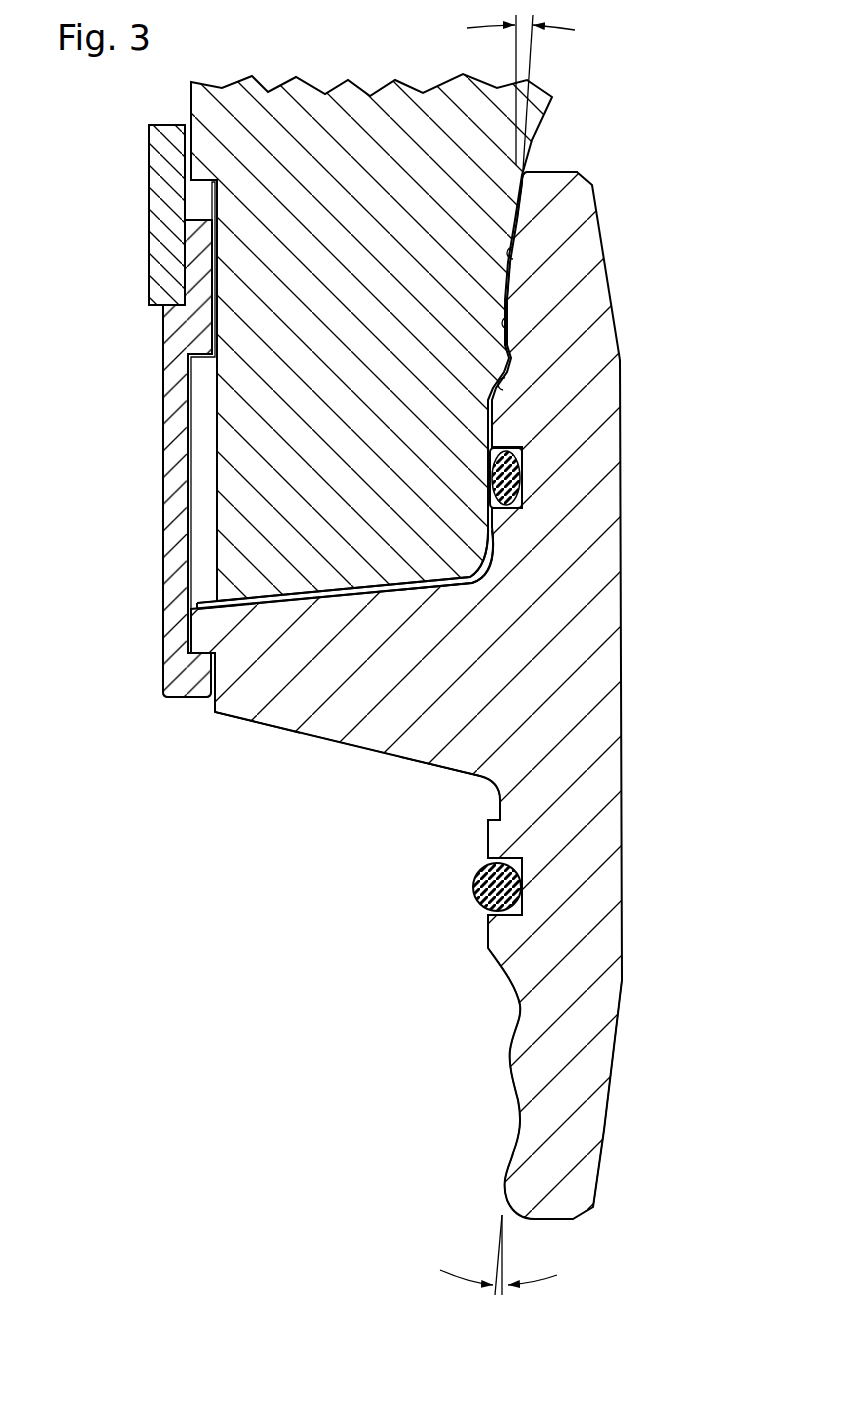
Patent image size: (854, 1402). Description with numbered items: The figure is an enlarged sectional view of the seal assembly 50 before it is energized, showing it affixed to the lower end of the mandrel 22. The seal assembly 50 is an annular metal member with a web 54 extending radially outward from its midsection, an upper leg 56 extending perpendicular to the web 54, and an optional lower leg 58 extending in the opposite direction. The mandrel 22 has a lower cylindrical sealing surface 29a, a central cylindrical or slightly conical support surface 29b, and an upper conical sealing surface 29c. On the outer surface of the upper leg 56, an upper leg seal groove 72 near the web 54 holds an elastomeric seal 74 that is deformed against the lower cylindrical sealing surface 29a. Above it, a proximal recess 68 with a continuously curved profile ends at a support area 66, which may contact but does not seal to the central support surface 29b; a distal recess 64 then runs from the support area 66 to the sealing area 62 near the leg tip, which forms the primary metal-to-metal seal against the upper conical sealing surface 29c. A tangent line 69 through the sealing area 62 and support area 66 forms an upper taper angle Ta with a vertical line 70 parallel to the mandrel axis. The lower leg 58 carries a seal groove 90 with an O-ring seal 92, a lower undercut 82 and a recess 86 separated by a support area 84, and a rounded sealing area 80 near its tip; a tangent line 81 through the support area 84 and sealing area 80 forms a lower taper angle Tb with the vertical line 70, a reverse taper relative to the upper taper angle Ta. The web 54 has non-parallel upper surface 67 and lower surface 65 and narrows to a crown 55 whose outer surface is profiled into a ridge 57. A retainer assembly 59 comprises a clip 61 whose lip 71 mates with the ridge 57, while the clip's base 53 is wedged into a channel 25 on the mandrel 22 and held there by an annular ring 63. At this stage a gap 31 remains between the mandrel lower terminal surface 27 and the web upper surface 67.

The mandrel 22 is at (372, 299).
The channel 25 is at (213, 192).
The lower terminal surface 27 is at (222, 578).
The lower cylindrical sealing surface 29a is at (510, 437).
The central cylindrical support surface 29b is at (508, 300).
The upper conical sealing surface 29c is at (515, 222).
The gap 31 is at (197, 605).
The seal assembly 50 is at (360, 884).
The base 53 is at (182, 321).
The web 54 is at (330, 745).
The crown 55 is at (233, 683).
The upper leg 56 is at (612, 277).
The ridge 57 is at (190, 640).
The lower leg 58 is at (612, 1130).
The retainer assembly 59 is at (148, 396).
The clip 61 is at (163, 515).
The sealing area 62 is at (523, 176).
The annular ring 63 is at (149, 228).
The distal recess 64 is at (513, 247).
The lower surface 65 is at (423, 765).
The support area 66 is at (505, 338).
The upper surface 67 is at (425, 590).
The proximal recess 68 is at (506, 395).
The tangent line 69 is at (530, 55).
The vertical line 70 is at (515, 47).
The lip 71 is at (195, 700).
The upper leg seal groove 72 is at (532, 502).
The elastomeric seal 74 is at (518, 477).
The sealing area 80 is at (505, 1200).
The tangent line 81 is at (500, 1256).
The lower undercut 82 is at (518, 1125).
The support area 84 is at (509, 1055).
The recess 86 is at (519, 1013).
The seal groove 90 is at (520, 872).
The O-ring seal 92 is at (475, 900).
The upper taper angle Ta is at (568, 30).
The lower taper angle Tb is at (548, 1284).